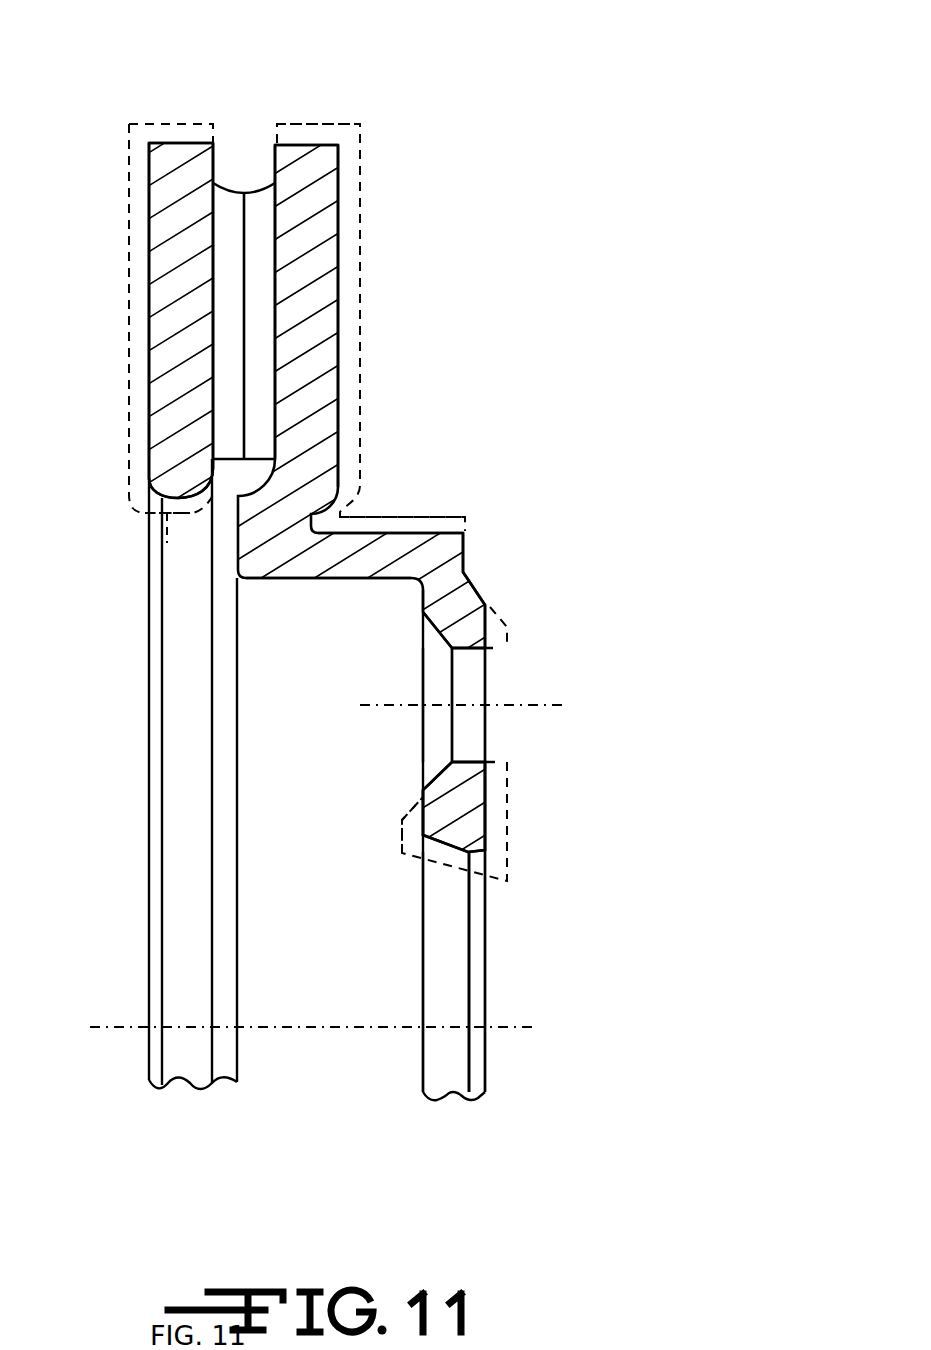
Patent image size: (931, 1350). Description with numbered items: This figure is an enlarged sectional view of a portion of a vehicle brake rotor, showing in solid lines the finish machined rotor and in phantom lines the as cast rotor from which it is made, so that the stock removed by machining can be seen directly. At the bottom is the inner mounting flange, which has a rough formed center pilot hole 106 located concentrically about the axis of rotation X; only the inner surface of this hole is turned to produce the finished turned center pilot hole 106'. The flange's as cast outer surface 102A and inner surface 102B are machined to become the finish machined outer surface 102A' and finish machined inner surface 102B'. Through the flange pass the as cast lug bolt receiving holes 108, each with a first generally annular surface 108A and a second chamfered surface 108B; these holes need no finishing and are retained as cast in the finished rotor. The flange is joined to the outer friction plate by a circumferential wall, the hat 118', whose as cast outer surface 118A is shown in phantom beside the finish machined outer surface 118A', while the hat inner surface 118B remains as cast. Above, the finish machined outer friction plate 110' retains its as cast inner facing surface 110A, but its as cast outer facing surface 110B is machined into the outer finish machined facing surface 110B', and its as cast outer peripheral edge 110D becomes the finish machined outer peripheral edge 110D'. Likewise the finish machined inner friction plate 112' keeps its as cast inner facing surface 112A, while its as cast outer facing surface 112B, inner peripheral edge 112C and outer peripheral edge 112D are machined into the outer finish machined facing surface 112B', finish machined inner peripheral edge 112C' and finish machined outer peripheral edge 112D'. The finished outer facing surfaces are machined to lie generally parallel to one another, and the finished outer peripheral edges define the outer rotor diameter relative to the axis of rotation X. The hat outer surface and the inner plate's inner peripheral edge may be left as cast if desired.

The outer surface of inner mounting flange 102A is at (511, 744).
The finish machined outer surface 102A' is at (538, 972).
The inner surface of inner mounting flange 102B is at (355, 832).
The finish machined inner surface 102B' is at (379, 972).
The center pilot hole 106 is at (350, 669).
The finished turned center pilot hole 106' is at (395, 844).
The lug bolt receiving holes 108 is at (475, 665).
The first generally annular surface 108A is at (470, 762).
The second chamfered surface 108B is at (437, 773).
The finish machined outer friction plate 110' is at (350, 669).
The inner facing surface of outer friction plate 110A is at (276, 379).
The outer facing surface of outer friction plate 110B is at (380, 327).
The outer finish machined facing surface 110B' is at (415, 316).
The outer peripheral edge of outer friction plate 110D is at (353, 88).
The finish machined outer peripheral edge 110D' is at (352, 73).
The finish machined inner friction plate 112' is at (309, 669).
The inner facing surface of inner friction plate 112A is at (203, 292).
The outer facing surface of inner friction plate 112B is at (113, 318).
The outer finish machined facing surface 112B' is at (76, 310).
The inner peripheral edge of inner friction plate 112C is at (121, 535).
The finish machined inner peripheral edge 112C' is at (119, 533).
The outer peripheral edge of inner friction plate 112D is at (142, 85).
The finish machined outer peripheral edge 112D' is at (137, 111).
The circumferential hat 118' is at (507, 585).
The hat outer surface 118A is at (436, 495).
The finish machined outer surface of hat 118A' is at (409, 481).
The hat inner surface 118B is at (353, 580).
The axis of rotation X is at (515, 1025).